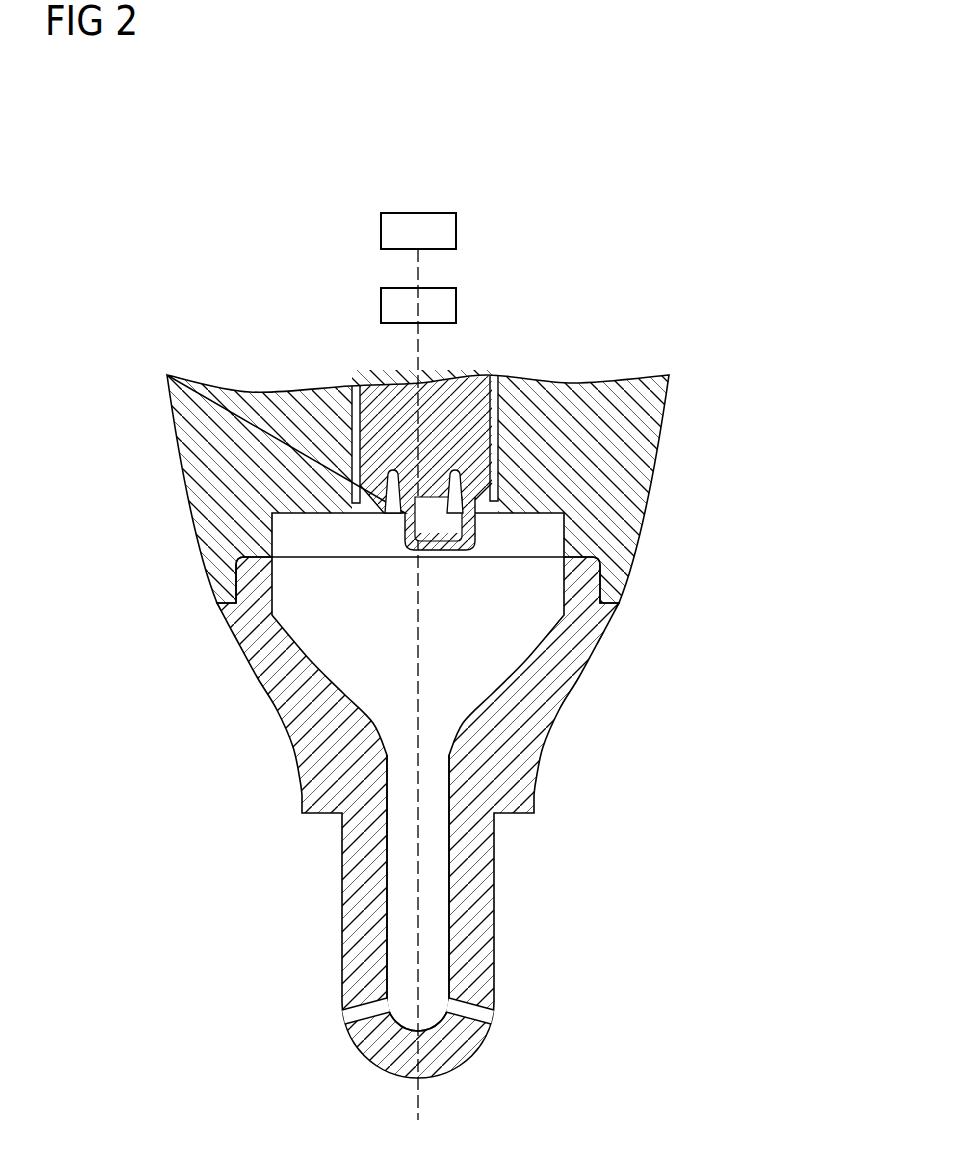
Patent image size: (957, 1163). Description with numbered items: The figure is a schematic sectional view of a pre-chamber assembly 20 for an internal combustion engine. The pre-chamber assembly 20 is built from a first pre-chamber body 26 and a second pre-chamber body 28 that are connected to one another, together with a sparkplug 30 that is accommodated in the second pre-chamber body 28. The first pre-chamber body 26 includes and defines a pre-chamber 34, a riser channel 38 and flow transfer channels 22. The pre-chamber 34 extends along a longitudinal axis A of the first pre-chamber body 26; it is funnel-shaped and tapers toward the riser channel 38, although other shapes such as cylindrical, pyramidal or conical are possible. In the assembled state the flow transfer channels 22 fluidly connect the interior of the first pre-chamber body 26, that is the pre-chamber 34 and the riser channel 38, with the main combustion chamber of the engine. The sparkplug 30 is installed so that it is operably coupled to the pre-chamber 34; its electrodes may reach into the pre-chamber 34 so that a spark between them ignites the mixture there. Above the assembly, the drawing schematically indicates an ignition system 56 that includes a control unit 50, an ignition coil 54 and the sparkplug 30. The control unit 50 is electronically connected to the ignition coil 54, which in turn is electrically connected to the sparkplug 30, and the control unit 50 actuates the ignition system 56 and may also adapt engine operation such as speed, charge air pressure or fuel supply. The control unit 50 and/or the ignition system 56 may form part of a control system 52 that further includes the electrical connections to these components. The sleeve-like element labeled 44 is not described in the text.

The pre-chamber assembly 20 is at (583, 344).
The flow transfer channels 22 is at (345, 1016).
The first pre-chamber body 26 is at (255, 750).
The second pre-chamber body 28 is at (152, 506).
The sparkplug 30 is at (462, 390).
The pre-chamber 34 is at (481, 609).
The riser channel 38 is at (433, 902).
The sleeve 44 is at (362, 390).
The control unit 50 is at (381, 230).
The control system 52 is at (716, 207).
The ignition coil 54 is at (381, 305).
The ignition system 56 is at (233, 231).
The longitudinal axis A is at (418, 1093).